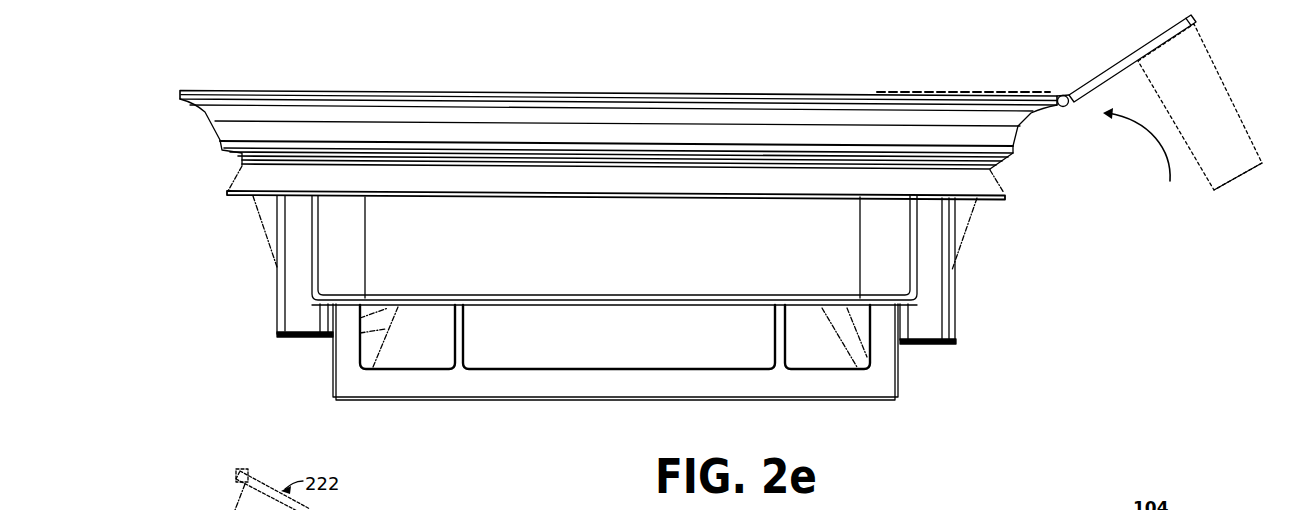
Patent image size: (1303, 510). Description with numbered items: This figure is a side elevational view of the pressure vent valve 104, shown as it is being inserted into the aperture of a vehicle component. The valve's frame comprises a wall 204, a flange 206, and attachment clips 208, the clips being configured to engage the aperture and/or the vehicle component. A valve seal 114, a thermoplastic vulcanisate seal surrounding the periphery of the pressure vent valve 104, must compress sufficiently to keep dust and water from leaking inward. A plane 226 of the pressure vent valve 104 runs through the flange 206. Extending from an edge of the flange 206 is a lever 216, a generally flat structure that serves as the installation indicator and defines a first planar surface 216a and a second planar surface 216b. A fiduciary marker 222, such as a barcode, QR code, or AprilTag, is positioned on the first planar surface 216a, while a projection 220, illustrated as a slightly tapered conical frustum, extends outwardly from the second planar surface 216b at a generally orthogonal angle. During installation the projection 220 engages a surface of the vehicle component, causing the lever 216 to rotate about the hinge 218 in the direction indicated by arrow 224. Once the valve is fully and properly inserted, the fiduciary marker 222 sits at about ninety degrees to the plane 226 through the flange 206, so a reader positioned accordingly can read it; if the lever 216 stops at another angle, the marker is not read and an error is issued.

The pressure vent valve 104 is at (184, 50).
The flange 206 is at (206, 111).
The valve seal 114 is at (233, 196).
The plane 226 is at (890, 90).
The wall 204 is at (627, 301).
The attachment clips 208 is at (291, 346).
The lever 216 is at (1200, 23).
The first planar surface 216a is at (1102, 70).
The second planar surface 216b is at (1123, 70).
The hinge 218 is at (1070, 101).
The projection 220 is at (1234, 181).
The fiduciary marker 222 is at (1170, 29).
The arrow 224 is at (1148, 138).